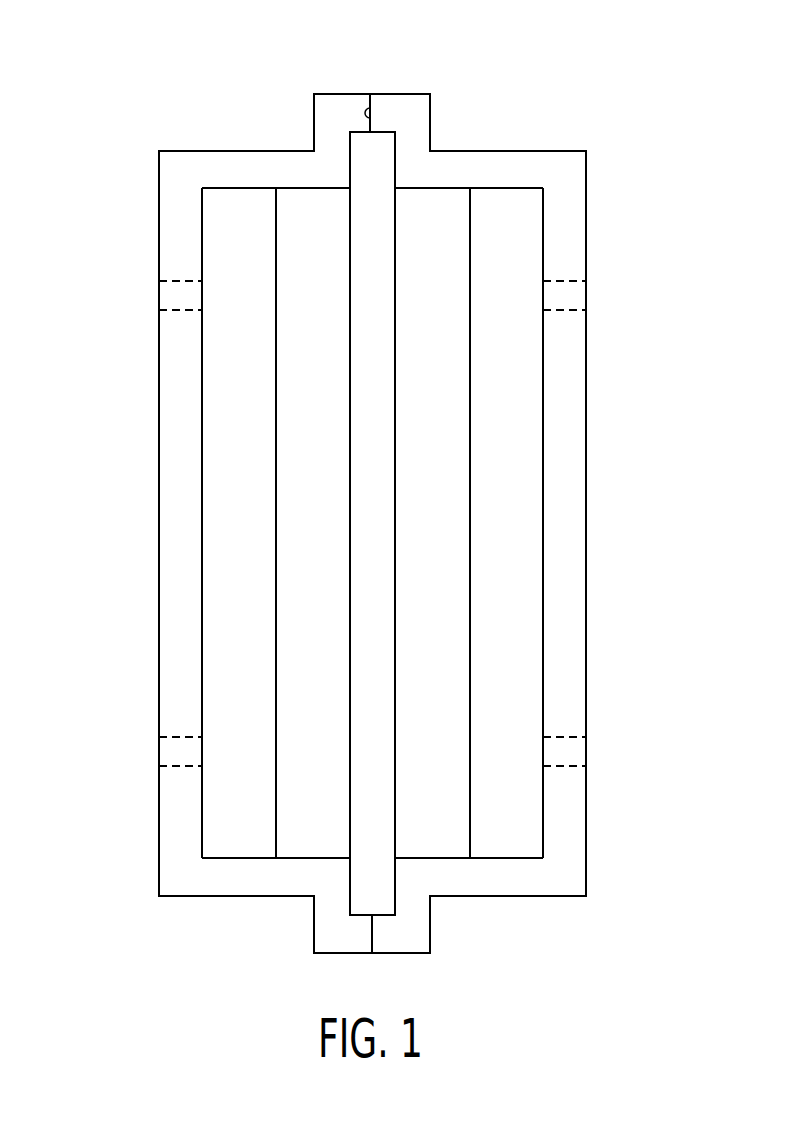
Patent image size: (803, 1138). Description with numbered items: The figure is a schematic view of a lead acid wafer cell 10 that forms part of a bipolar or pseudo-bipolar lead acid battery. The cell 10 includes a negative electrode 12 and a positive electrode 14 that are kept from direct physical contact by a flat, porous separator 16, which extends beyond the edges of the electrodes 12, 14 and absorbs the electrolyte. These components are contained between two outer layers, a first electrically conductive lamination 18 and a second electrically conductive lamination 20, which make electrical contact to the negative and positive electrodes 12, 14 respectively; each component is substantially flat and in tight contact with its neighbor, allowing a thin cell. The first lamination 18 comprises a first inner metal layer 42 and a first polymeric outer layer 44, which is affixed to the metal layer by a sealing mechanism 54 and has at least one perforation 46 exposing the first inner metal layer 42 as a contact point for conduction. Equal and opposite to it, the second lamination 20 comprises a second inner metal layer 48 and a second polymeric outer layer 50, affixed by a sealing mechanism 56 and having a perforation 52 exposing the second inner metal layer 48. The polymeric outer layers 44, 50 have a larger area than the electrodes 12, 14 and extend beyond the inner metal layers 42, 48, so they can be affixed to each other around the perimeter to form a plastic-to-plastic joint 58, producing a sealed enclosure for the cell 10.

The lead acid wafer cell 10 is at (163, 106).
The negative electrode 12 is at (433, 837).
The positive electrode 14 is at (297, 819).
The separator 16 is at (370, 167).
The first electrically conductive lamination 18 is at (510, 557).
The second electrically conductive lamination 20 is at (233, 557).
The first inner metal layer 42 is at (510, 832).
The first polymeric outer layer 44 is at (565, 635).
The perforation 46 is at (543, 296).
The second inner metal layer 48 is at (233, 678).
The second polymeric outer layer 50 is at (178, 635).
The perforation 52 is at (160, 297).
The sealing mechanism 54 is at (543, 230).
The sealing mechanism 56 is at (200, 230).
The plastic-to-plastic joint 58 is at (370, 94).